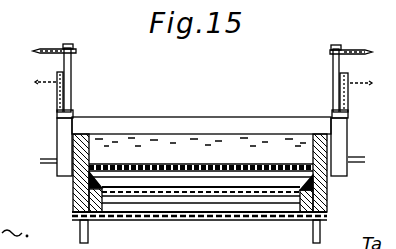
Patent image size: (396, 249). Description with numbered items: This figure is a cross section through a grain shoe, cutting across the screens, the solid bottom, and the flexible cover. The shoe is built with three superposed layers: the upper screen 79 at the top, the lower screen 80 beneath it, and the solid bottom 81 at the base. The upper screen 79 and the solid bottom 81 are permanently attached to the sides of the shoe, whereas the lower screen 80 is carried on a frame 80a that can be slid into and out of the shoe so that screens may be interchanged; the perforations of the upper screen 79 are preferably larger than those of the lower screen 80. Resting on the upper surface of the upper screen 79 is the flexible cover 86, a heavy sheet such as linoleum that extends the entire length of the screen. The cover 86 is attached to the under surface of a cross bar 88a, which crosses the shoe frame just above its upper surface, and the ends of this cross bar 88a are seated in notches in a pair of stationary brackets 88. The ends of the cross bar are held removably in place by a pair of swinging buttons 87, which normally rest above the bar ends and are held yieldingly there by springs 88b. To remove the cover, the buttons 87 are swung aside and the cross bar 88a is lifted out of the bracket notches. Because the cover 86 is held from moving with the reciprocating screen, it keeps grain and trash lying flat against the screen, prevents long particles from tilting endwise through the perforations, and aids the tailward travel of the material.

The spring 88b is at (71, 66).
The swinging button 87 is at (57, 93).
The stationary bracket 88 is at (57, 148).
The cross bar 88a is at (201, 114).
The flexible cover 86 is at (232, 140).
The upper screen 79 is at (176, 168).
The lower screen 80 is at (185, 197).
The solid bottom 81 is at (233, 222).
The frame 80a is at (310, 204).